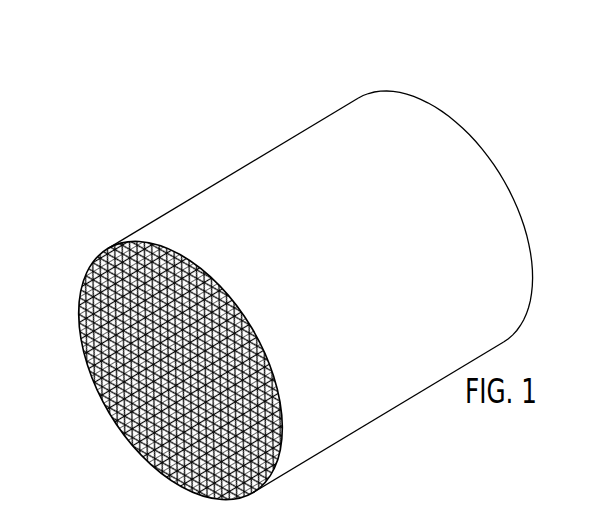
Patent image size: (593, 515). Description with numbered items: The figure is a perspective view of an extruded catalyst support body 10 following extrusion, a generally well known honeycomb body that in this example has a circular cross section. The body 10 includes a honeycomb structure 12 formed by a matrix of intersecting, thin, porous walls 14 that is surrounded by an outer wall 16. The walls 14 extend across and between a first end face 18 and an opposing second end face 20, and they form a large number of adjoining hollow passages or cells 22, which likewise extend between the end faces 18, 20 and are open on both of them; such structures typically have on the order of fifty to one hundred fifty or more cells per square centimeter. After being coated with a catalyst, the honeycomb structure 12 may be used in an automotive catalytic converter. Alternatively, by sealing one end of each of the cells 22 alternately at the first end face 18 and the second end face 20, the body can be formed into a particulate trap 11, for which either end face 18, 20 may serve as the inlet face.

The catalyst support body 10 is at (310, 78).
The particulate trap 11 is at (286, 511).
The honeycomb structure 12 is at (72, 270).
The porous walls 14 is at (82, 337).
The outer wall 16 is at (263, 170).
The first end face 18 is at (282, 448).
The second end face 20 is at (463, 123).
The cells 22 is at (152, 465).